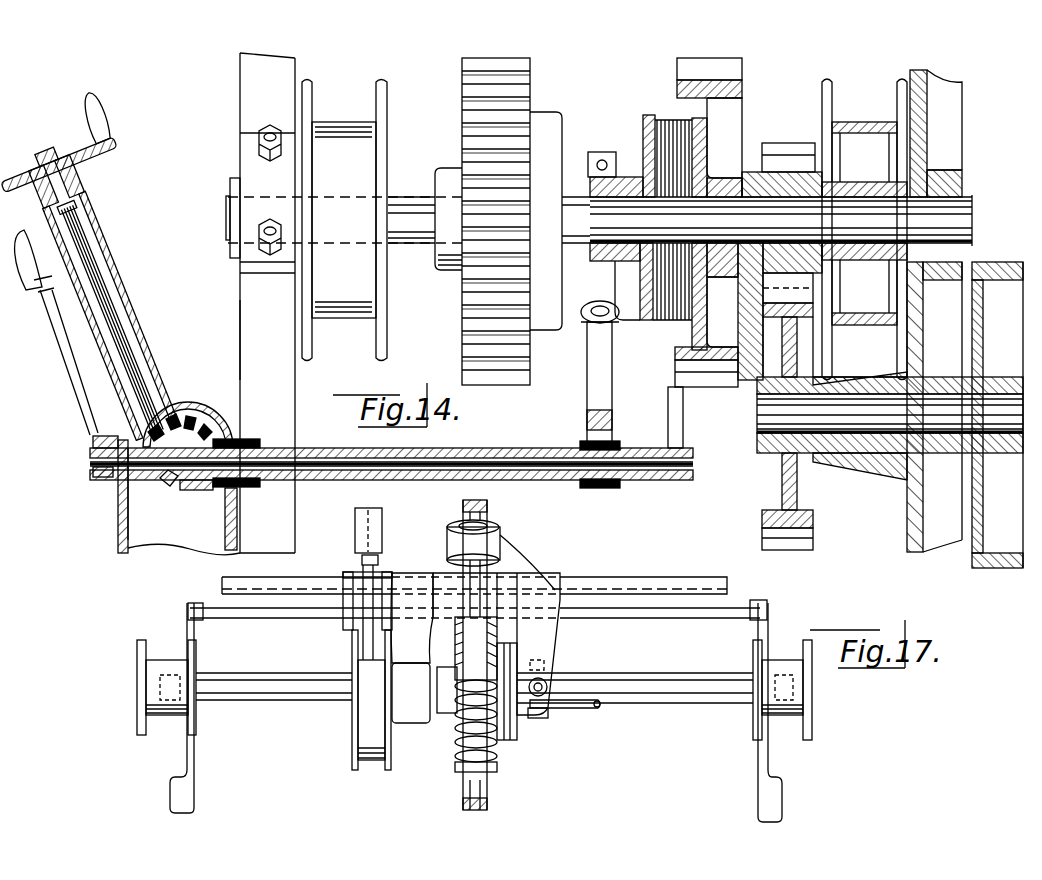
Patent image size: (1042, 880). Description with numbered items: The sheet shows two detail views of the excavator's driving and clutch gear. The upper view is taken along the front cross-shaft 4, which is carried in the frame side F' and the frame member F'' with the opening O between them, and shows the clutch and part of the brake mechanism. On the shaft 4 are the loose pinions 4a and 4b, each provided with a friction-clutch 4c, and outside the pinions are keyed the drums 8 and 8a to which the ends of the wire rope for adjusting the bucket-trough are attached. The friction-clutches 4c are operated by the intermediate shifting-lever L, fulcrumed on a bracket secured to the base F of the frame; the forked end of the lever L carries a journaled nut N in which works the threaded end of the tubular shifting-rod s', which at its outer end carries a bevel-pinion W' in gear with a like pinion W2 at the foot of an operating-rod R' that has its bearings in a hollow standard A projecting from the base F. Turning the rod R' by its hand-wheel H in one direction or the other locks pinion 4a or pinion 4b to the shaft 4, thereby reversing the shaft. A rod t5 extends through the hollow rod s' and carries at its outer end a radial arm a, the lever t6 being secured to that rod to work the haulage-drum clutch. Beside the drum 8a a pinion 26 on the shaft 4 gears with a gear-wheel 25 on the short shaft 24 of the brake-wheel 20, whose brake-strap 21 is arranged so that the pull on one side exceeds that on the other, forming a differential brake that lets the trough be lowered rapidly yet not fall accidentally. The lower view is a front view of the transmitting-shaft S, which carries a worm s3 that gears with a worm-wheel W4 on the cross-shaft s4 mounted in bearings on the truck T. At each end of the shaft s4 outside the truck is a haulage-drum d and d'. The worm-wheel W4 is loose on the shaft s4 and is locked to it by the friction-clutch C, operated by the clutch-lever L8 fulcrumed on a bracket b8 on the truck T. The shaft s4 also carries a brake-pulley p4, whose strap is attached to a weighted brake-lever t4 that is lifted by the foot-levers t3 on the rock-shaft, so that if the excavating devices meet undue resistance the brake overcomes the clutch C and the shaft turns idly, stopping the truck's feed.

In FIG. 14, the frame side F' is at (211, 304).
In FIG. 14, the frame opening O is at (252, 340).
In FIG. 14, the drum 8 is at (344, 220).
In FIG. 14, the front cross-shaft 4 is at (983, 222).
In FIG. 14, the pinion 4b is at (450, 336).
In FIG. 14, the friction-clutch 4c is at (645, 132).
In FIG. 14, the pinion 4a is at (723, 222).
In FIG. 14, the pinion 26 is at (782, 210).
In FIG. 14, the drum 8a is at (860, 122).
In FIG. 14, the frame F'' is at (949, 311).
In FIG. 14, the brake-strap 21 is at (997, 418).
In FIG. 14, the brake-wheel 20 is at (997, 415).
In FIG. 14, the short shaft 24 is at (890, 413).
In FIG. 14, the gear-wheel 25 is at (890, 426).
In FIG. 14, the shifting-lever L is at (600, 373).
In FIG. 14, the radial arm a is at (683, 417).
In FIG. 14, the rod t5 is at (156, 478).
In FIG. 14, the nut N is at (582, 442).
In FIG. 14, the tubular shifting-rod s' is at (431, 470).
In FIG. 14, the base of the frame F is at (150, 494).
In FIG. 14, the bevel-pinion W2 is at (188, 424).
In FIG. 14, the bevel-pinion W' is at (154, 494).
In FIG. 14, the hollow standard A is at (137, 305).
In FIG. 14, the operating-rod R' is at (136, 307).
In FIG. 14, the hand-wheel H is at (77, 150).
In FIG. 14, the handle rod t6 is at (56, 332).
In FIG. 17, the truck T is at (474, 572).
In FIG. 17, the arm t3 is at (477, 712).
In FIG. 17, the haulage-drum d is at (166, 685).
In FIG. 17, the haulage-drum d' is at (782, 688).
In FIG. 17, the cross-shaft s4 is at (474, 684).
In FIG. 17, the brake-pulley p4 is at (367, 671).
In FIG. 17, the block t4 is at (378, 571).
In FIG. 17, the transmitting-shaft S is at (484, 512).
In FIG. 17, the worm s3 is at (455, 755).
In FIG. 17, the bracket b8 is at (515, 582).
In FIG. 17, the worm-wheel W4 is at (488, 648).
In FIG. 17, the friction-clutch C is at (508, 738).
In FIG. 17, the clutch-lever L8 is at (598, 709).